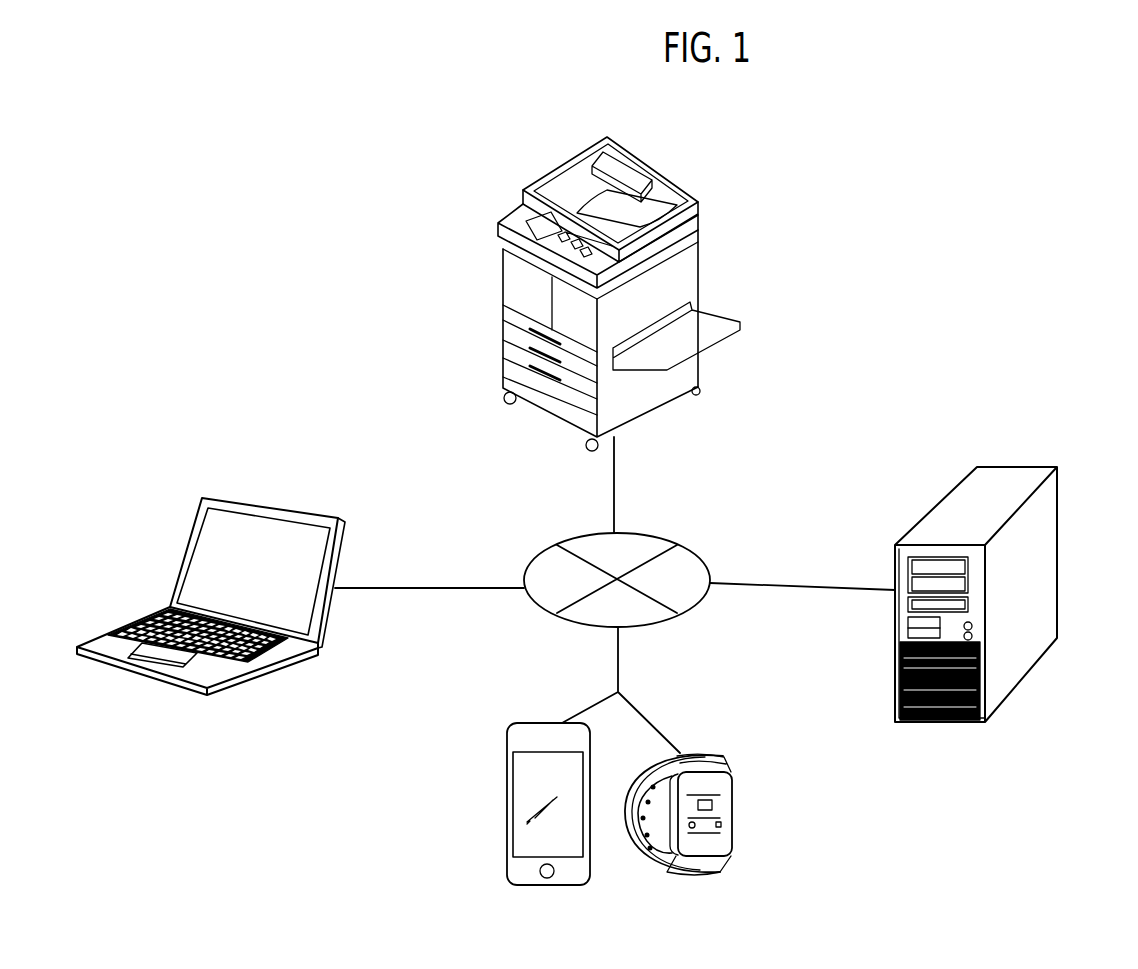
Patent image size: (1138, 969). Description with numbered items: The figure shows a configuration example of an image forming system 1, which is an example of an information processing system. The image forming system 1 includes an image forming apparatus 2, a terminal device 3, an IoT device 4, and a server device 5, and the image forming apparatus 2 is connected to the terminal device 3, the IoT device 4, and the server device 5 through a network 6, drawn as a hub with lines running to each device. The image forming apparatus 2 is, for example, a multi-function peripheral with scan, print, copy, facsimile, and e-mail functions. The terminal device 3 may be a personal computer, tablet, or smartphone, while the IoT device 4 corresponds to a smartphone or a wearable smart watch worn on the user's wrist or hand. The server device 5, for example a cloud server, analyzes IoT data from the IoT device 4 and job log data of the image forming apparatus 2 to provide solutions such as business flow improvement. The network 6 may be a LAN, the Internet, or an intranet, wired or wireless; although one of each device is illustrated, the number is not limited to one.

The image forming system 1 is at (1040, 135).
The image forming apparatus 2 is at (672, 187).
The terminal device 3 is at (290, 512).
The IoT device 4 is at (612, 872).
The server device 5 is at (1019, 464).
The network 6 is at (842, 586).